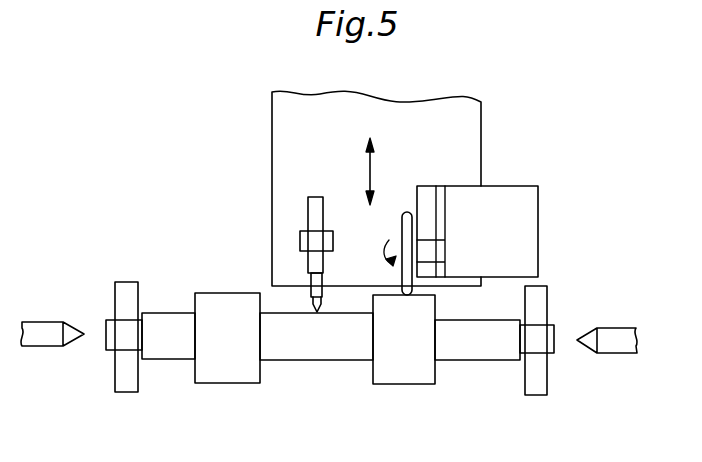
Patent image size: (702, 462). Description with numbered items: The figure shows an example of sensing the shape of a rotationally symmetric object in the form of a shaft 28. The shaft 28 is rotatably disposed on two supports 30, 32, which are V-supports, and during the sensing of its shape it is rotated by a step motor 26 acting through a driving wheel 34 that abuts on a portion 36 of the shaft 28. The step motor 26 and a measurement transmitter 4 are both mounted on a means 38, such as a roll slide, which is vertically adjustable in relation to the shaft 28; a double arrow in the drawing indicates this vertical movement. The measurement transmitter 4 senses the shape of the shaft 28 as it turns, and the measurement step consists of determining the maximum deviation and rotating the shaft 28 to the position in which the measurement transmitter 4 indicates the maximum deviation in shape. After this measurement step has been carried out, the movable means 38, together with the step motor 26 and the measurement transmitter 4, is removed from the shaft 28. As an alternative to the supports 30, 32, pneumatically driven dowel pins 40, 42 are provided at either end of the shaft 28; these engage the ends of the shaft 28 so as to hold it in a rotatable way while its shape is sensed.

The measurement transmitter 4 is at (320, 197).
The step motor 26 is at (494, 207).
The shaft 28 is at (323, 348).
The support 30 is at (130, 378).
The support 32 is at (542, 383).
The driving wheel 34 is at (403, 223).
The portion of the shaft 36 is at (423, 374).
The means 38 is at (283, 157).
The dowel pin 40 is at (53, 342).
The dowel pin 42 is at (620, 344).